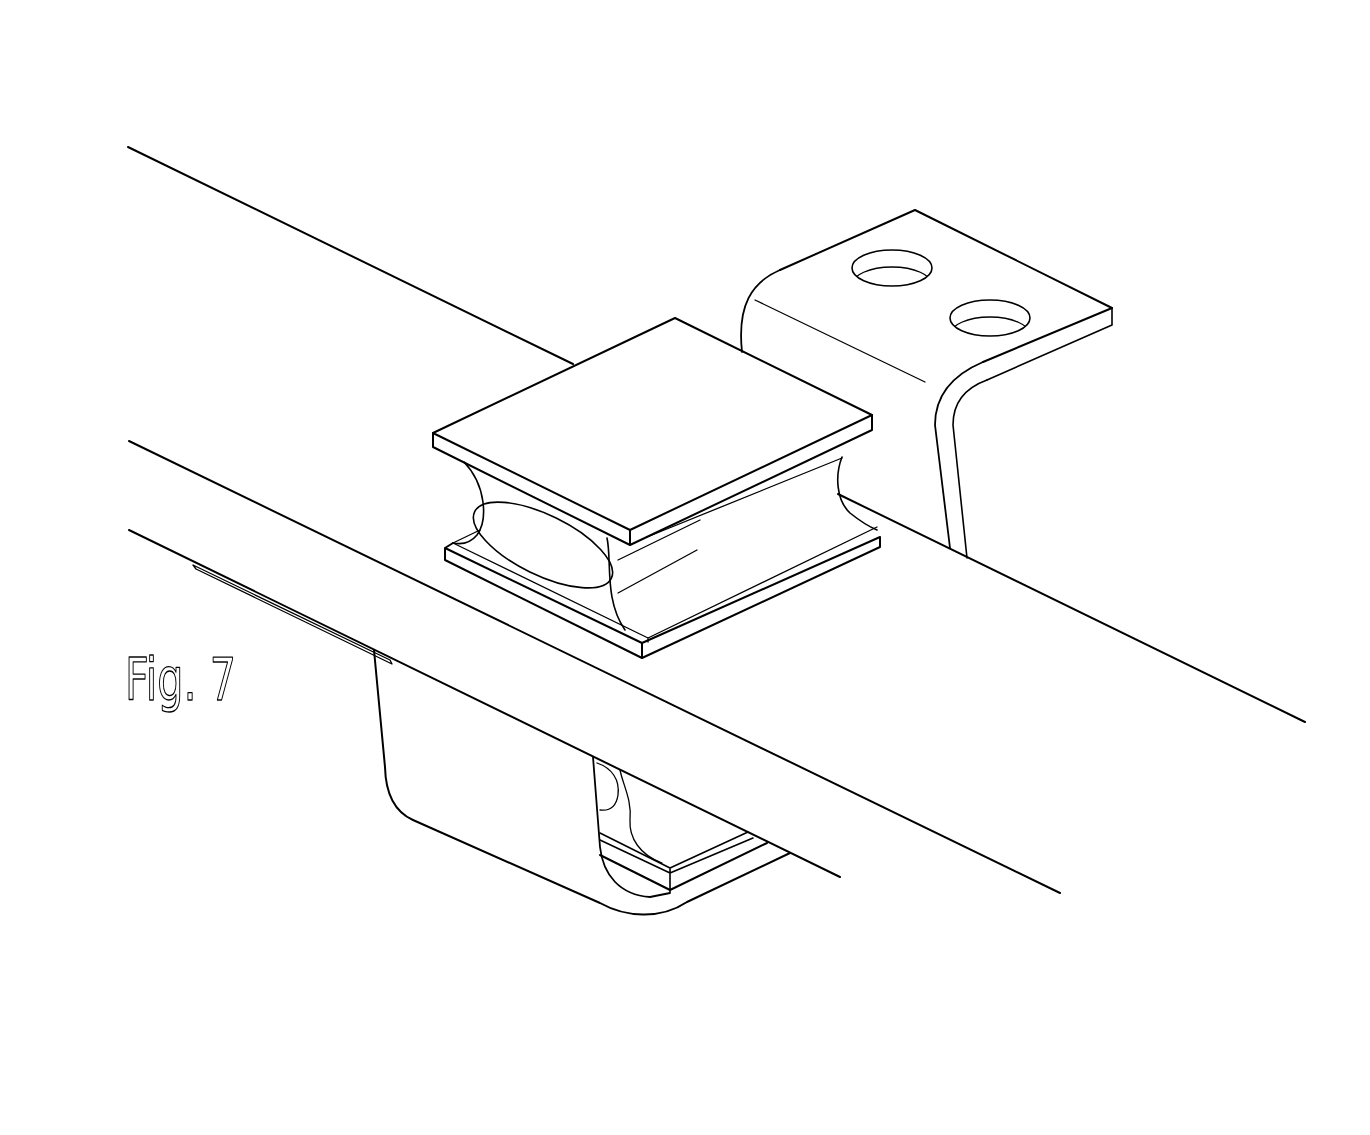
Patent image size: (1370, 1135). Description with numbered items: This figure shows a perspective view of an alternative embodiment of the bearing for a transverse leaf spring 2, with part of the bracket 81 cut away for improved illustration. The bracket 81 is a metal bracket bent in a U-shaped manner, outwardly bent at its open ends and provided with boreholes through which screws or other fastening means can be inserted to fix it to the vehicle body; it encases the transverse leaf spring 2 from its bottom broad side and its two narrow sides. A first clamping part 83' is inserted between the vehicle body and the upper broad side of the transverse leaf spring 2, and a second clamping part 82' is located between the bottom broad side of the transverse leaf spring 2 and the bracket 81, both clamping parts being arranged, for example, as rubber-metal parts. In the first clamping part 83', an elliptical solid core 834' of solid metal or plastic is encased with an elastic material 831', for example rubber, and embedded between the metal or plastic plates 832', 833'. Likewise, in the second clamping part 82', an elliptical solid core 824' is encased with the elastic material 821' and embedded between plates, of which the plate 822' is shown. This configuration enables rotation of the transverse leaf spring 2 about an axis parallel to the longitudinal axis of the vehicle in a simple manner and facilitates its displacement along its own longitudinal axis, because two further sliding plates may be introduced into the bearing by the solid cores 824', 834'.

The transverse leaf spring 2 is at (1125, 697).
The bracket 81 is at (945, 488).
The first clamping part 83' is at (849, 422).
The elastic material 831' is at (941, 436).
The metal or plastic plate 832' is at (895, 592).
The metal or plastic plate 833' is at (652, 374).
The elliptical solid core 834' is at (615, 414).
The second clamping part 82' is at (761, 782).
The elastic material 821' is at (791, 812).
The metal or plastic plate 822' is at (910, 862).
The elliptical solid core 824' is at (727, 767).